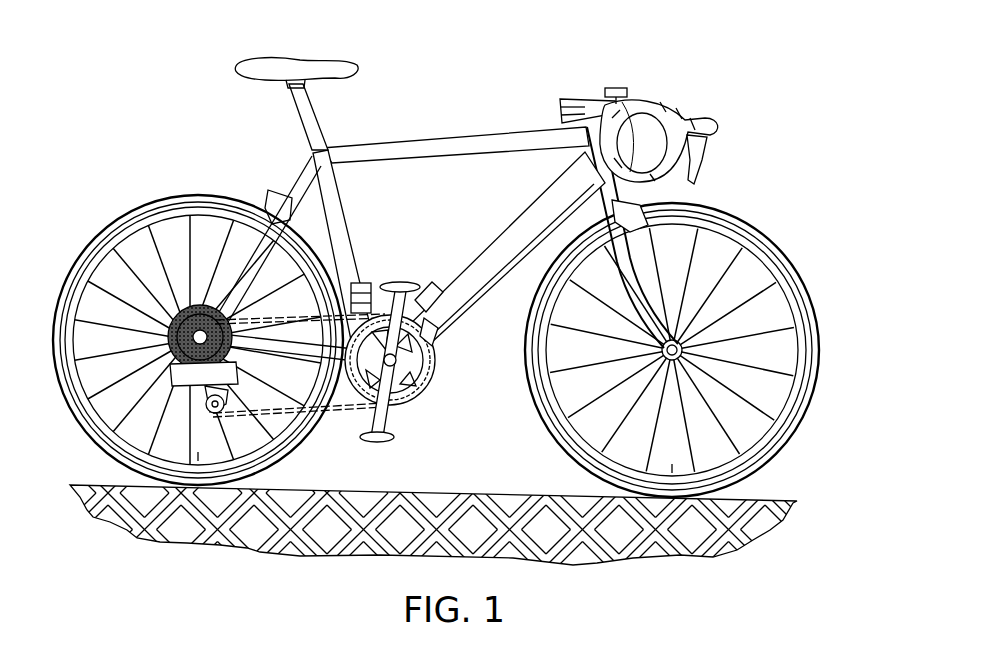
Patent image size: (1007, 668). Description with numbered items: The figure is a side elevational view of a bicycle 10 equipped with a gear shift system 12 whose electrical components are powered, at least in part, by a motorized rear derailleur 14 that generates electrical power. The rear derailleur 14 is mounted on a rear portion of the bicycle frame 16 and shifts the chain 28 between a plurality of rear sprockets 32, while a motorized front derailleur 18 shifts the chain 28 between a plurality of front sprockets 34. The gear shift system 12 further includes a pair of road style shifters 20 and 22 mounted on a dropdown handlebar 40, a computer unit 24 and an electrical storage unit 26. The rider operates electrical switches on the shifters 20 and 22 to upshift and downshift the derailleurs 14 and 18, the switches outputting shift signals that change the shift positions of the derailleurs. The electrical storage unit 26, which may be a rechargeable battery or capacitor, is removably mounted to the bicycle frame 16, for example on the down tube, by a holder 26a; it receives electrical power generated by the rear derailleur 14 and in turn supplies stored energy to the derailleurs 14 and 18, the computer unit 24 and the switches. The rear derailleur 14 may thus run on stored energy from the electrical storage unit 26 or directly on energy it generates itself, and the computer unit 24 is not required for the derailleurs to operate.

The bicycle 10 is at (707, 63).
The gear shift system 12 is at (462, 330).
The motorized rear derailleur 14 is at (156, 378).
The bicycle frame 16 is at (440, 136).
The motorized front derailleur 18 is at (371, 280).
The shifter 20 is at (728, 146).
The shifter 22 is at (697, 159).
The computer unit 24 is at (613, 86).
The electrical storage unit 26 is at (430, 284).
The holder 26a is at (434, 343).
The chain 28 is at (412, 402).
The rear sprockets 32 is at (166, 318).
The front sprockets 34 is at (348, 400).
The dropdown handlebar 40 is at (645, 106).